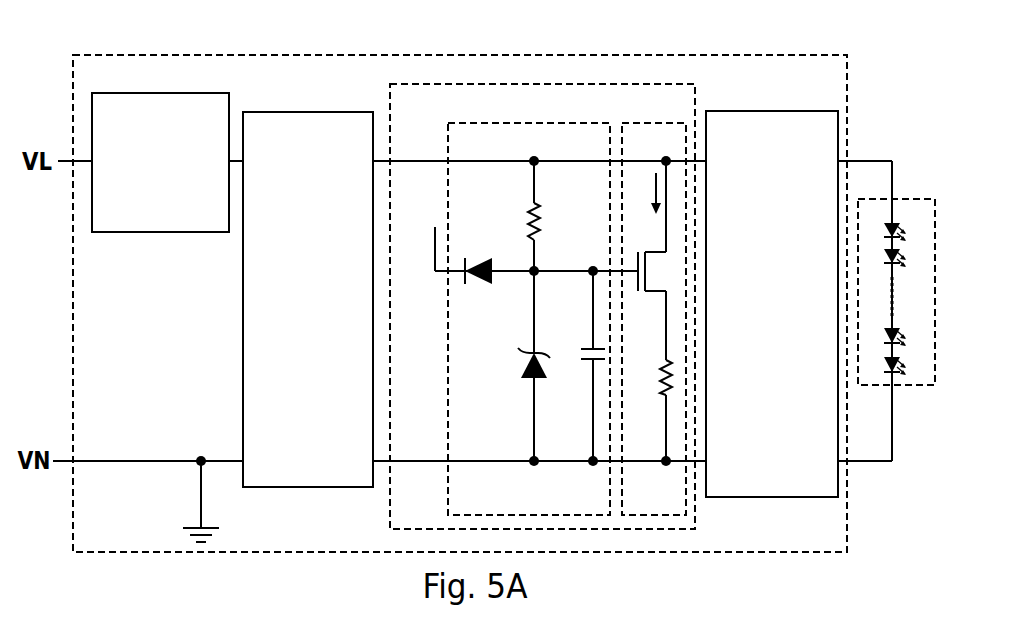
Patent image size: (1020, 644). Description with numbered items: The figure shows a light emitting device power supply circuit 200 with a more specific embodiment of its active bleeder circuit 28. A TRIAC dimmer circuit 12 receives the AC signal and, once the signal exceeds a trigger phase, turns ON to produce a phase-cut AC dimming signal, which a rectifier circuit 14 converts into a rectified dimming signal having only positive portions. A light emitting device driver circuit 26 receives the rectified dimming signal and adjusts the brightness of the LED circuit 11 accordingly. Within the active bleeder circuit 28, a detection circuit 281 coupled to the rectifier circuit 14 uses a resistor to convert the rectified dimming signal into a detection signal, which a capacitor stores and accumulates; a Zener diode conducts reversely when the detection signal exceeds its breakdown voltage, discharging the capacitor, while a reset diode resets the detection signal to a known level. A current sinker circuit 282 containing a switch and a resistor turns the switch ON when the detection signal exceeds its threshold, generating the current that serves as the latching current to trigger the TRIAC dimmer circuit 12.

The light emitting device power supply circuit 200 is at (141, 545).
The TRIAC dimmer circuit 12 is at (174, 224).
The rectifier circuit 14 is at (323, 344).
The active bleeder circuit 28 is at (429, 116).
The detection circuit 281 is at (463, 509).
The current sinker circuit 282 is at (632, 509).
The light emitting device driver circuit 26 is at (786, 391).
The LED circuit 11 is at (927, 199).